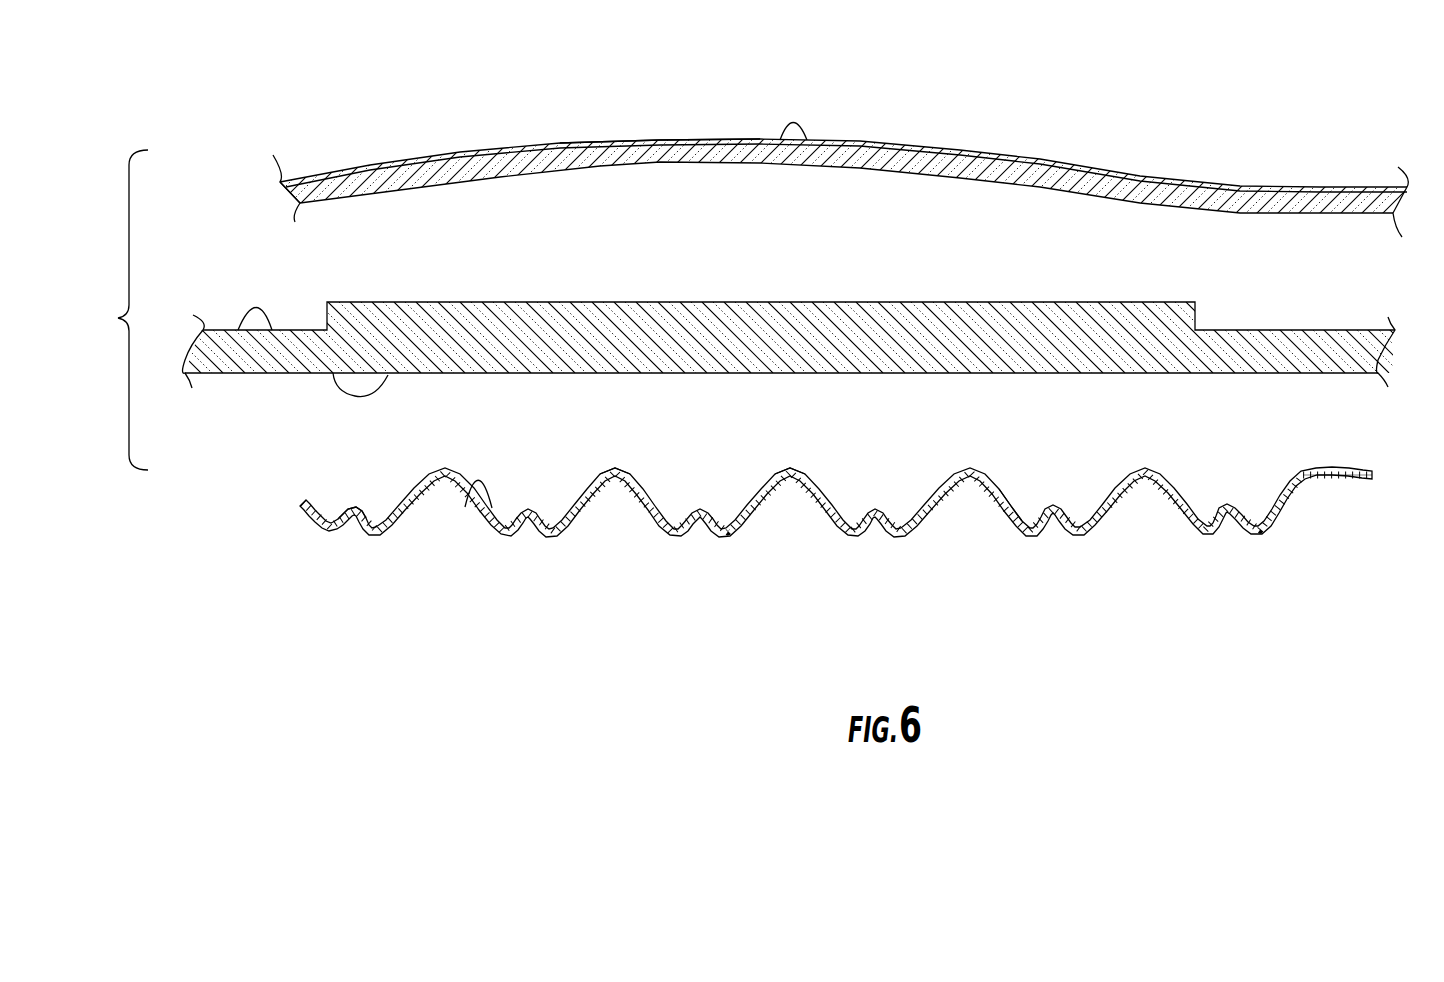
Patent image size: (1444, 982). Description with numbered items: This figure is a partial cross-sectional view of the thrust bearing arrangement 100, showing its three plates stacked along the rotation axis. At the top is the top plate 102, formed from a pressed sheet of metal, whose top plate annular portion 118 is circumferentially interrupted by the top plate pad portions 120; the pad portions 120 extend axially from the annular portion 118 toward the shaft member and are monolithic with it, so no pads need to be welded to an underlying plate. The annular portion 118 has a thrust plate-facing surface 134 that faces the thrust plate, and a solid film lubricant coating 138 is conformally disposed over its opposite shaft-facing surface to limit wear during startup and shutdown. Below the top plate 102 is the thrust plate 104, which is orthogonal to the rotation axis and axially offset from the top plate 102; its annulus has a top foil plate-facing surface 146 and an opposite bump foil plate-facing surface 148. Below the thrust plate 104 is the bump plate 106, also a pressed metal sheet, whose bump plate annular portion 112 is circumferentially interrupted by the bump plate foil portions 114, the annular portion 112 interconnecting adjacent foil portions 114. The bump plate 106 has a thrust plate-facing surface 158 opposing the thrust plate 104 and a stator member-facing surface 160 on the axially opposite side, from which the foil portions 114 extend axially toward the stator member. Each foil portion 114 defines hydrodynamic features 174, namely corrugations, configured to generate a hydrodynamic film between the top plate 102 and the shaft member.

The thrust bearing arrangement 100 is at (111, 310).
The top plate 102 is at (1012, 138).
The thrust plate 104 is at (1240, 296).
The bump plate 106 is at (1255, 466).
The bump plate annular portion 112 is at (1340, 481).
The bump plate foil portions 114 is at (1010, 516).
The top plate annular portion 118 is at (320, 193).
The top plate pad portions 120 is at (645, 140).
The thrust plate-facing surface 134 is at (779, 152).
The solid film lubricant coating 138 is at (475, 152).
The top foil plate-facing surface 146 is at (270, 332).
The bump foil plate-facing surface 148 is at (388, 375).
The thrust plate-facing surface 158 is at (373, 542).
The stator member-facing surface 160 is at (472, 497).
The hydrodynamic features 174 is at (813, 546).